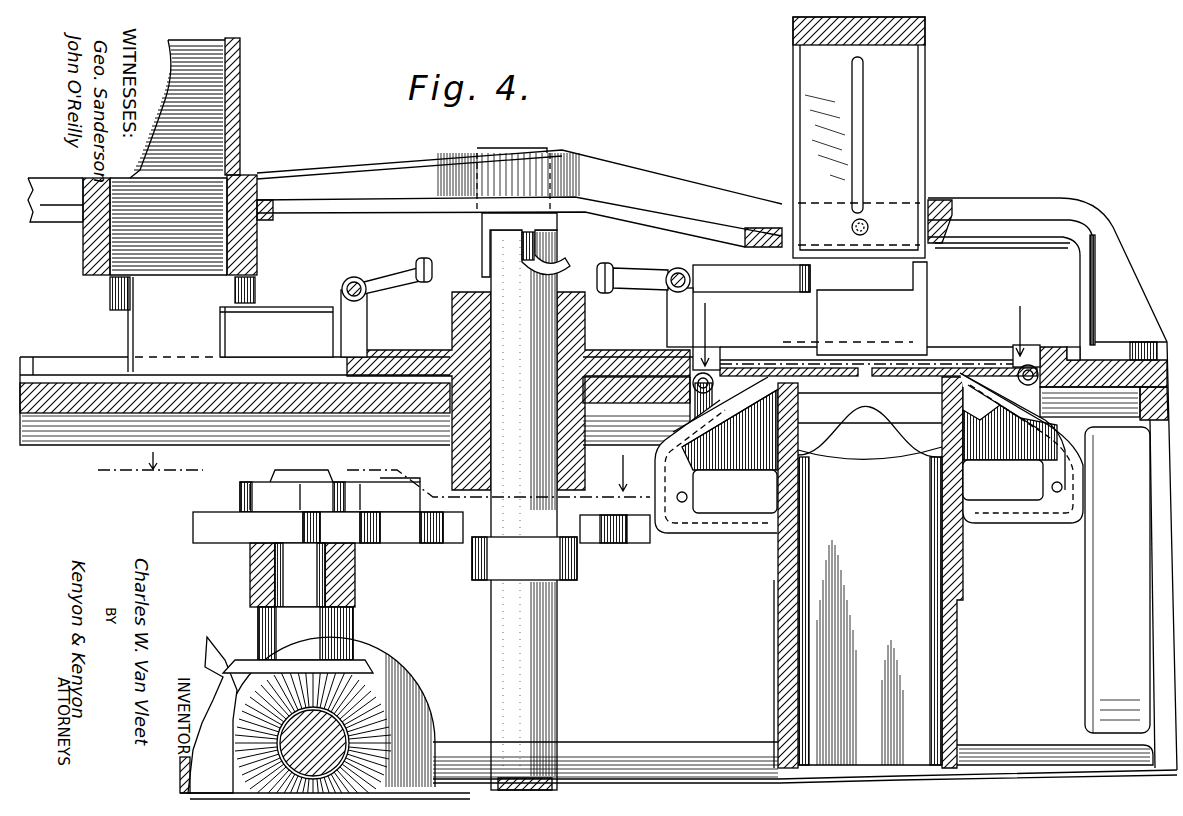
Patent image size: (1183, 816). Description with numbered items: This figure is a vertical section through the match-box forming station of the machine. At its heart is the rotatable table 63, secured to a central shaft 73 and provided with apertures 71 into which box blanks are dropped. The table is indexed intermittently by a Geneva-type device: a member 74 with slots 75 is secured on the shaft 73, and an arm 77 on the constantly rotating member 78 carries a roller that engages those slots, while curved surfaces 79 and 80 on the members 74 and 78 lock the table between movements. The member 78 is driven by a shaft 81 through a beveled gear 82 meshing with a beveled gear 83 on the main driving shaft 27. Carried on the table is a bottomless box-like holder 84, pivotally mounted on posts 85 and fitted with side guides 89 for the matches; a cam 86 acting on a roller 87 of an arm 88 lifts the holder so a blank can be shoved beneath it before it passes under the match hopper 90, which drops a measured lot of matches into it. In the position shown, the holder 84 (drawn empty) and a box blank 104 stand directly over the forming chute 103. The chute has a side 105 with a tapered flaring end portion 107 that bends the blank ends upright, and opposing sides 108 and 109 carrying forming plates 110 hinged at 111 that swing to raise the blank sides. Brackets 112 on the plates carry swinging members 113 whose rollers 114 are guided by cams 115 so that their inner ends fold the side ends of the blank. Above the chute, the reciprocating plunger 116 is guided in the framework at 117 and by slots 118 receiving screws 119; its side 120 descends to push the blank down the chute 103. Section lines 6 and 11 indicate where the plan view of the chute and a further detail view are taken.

The section line 6— 6 is at (886, 325).
The section line 11— 11 is at (374, 473).
The main driving shaft 27 is at (213, 672).
The rotatable table 63 is at (384, 350).
The aperture 71 is at (276, 358).
The shaft 73 is at (568, 262).
The member of intermittent motion device 74 is at (592, 543).
The slots 75 is at (636, 543).
The arm 77 is at (360, 500).
The constantly rotating member 78 is at (193, 528).
The curved surface 79 is at (470, 548).
The curved surface 80 is at (228, 545).
The shaft 81 is at (355, 600).
The beveled gear 82 is at (372, 677).
The beveled gear 83 is at (388, 728).
The holder 84 is at (222, 310).
The post 85 is at (341, 322).
The cam 86 is at (482, 252).
The roller 87 is at (426, 258).
The arm 88 is at (365, 285).
The side guides 89 is at (133, 320).
The match hopper 90 is at (240, 100).
The forming chute 103 is at (957, 654).
The box blank 104 is at (952, 352).
The side of forming chute 105 is at (908, 476).
The tapered flaring end portion 107 is at (880, 418).
The side of forming chute 108 is at (963, 584).
The side of forming chute 109 is at (776, 585).
The forming plate 110 is at (865, 378).
The hinge 111 is at (790, 378).
The bracket 112 is at (1012, 357).
The swinging member 113 is at (718, 478).
The roller 114 is at (688, 497).
The cam 115 is at (738, 420).
The plunger 116 is at (925, 88).
The framework guide 117 is at (781, 200).
The slot 118 is at (863, 133).
The screw 119 is at (868, 222).
The side of plunger 120 is at (826, 126).